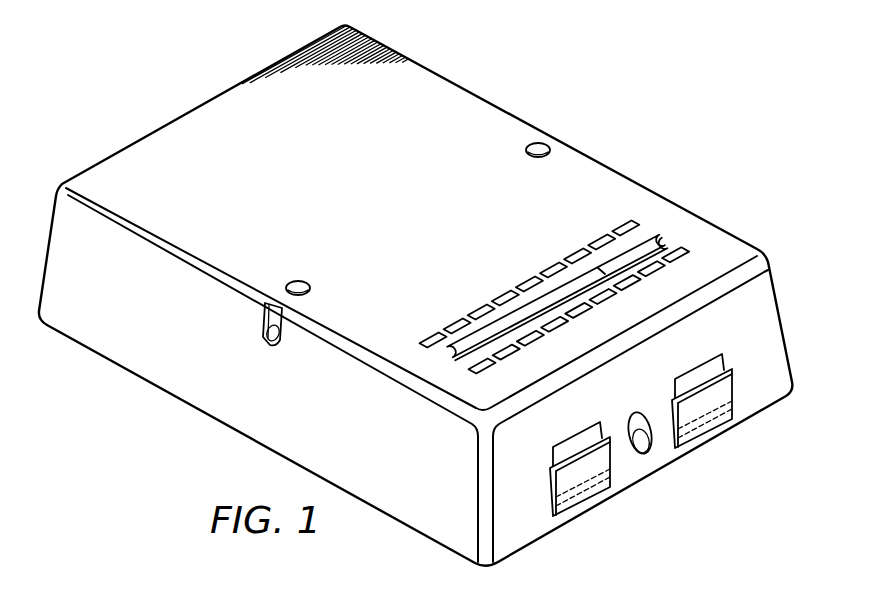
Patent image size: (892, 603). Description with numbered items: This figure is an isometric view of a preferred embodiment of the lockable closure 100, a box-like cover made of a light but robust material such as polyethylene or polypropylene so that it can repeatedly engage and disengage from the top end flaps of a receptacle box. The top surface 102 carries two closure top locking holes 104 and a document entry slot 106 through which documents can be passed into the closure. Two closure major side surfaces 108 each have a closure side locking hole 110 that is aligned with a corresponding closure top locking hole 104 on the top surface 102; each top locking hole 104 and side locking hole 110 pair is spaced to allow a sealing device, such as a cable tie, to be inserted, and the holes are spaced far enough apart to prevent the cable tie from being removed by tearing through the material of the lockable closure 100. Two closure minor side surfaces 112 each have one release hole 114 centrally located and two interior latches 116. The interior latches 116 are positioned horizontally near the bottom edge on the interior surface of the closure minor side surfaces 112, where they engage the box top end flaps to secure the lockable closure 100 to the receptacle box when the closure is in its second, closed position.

The lockable closure 100 is at (598, 108).
The top surface 102 is at (198, 113).
The closure top locking holes 104 is at (532, 158).
The document entry slot 106 is at (668, 231).
The closure major side surfaces 108 is at (232, 417).
The closure side locking hole 110 is at (265, 347).
The closure minor side surfaces 112 is at (524, 538).
The release hole 114 is at (639, 412).
The interior latches 116 is at (590, 492).